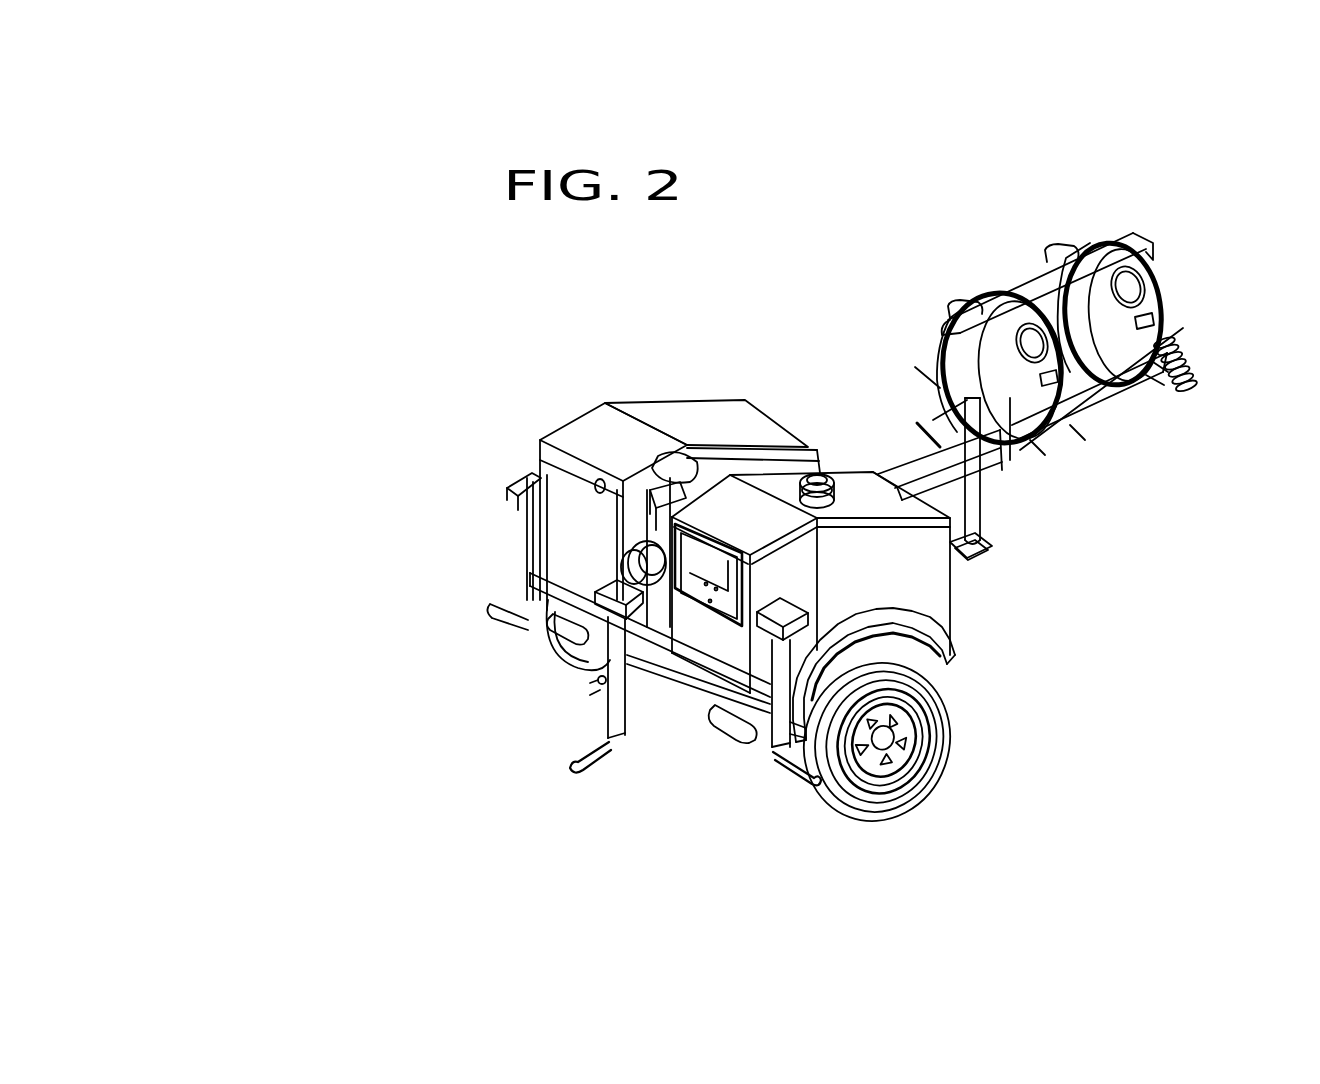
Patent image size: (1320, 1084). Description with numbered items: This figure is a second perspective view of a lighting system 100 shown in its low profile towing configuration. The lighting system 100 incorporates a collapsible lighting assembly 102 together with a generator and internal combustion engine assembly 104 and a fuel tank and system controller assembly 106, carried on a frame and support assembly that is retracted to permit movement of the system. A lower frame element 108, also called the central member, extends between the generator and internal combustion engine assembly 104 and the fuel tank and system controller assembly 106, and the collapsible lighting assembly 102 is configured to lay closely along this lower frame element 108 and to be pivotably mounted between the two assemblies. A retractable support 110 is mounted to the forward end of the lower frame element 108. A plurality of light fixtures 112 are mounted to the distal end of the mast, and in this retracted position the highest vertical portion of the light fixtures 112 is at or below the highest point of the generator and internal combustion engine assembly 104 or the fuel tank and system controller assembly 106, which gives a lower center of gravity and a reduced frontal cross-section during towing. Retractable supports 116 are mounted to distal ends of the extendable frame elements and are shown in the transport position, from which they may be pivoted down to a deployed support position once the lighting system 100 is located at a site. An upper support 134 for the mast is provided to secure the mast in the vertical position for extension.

The lighting system 100 is at (482, 539).
The collapsible lighting assembly 102 is at (915, 477).
The generator and internal combustion engine assembly 104 is at (593, 430).
The fuel tank and system controller assembly 106 is at (870, 560).
The lower frame element 108 is at (1005, 490).
The retractable support 110 is at (983, 550).
The light fixtures 112 is at (1000, 345).
The retractable support 116 is at (532, 525).
The upper support 134 is at (615, 505).